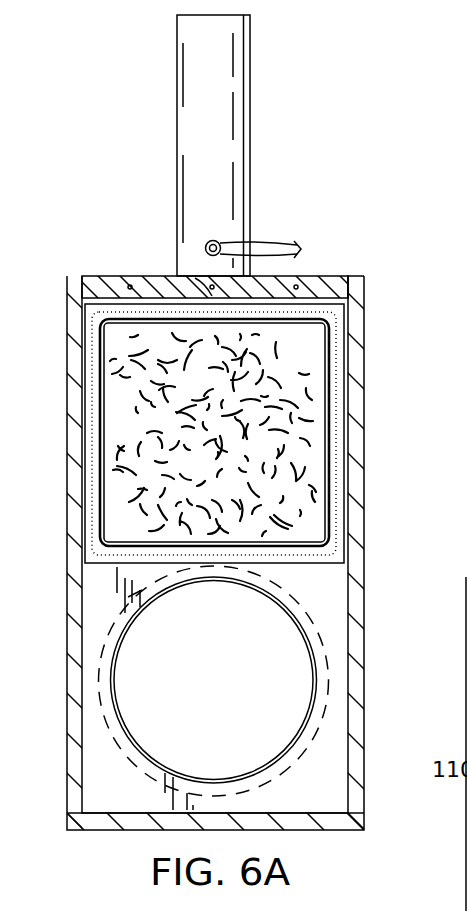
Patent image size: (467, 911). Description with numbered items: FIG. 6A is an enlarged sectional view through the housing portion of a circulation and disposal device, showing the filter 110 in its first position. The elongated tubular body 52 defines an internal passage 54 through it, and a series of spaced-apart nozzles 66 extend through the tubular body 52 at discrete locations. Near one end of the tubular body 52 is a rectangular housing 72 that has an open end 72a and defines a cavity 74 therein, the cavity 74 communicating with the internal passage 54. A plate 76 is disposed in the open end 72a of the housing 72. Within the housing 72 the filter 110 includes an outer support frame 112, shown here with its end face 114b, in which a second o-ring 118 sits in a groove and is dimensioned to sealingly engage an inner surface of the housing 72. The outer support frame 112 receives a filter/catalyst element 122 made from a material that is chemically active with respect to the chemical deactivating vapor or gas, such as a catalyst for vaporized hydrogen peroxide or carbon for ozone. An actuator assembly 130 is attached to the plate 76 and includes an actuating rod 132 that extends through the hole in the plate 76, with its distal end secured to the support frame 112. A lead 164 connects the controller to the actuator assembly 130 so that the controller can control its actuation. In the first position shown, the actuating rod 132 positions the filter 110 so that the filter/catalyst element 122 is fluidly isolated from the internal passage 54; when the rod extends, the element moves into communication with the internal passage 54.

The actuator assembly 130 is at (250, 110).
The lead 164 is at (266, 242).
The actuating rod 132 is at (210, 289).
The plate 76 is at (324, 286).
The open end 72a is at (363, 283).
The housing 72 is at (366, 345).
The end face 114b is at (340, 418).
The outer support frame 112 is at (344, 455).
The second o-ring 118 is at (332, 496).
The filter/catalyst element 122 is at (108, 428).
The filter 110 is at (104, 572).
The cavity 74 is at (358, 596).
The internal passage 54 is at (293, 689).
The nozzles 66 is at (99, 671).
The tubular body 52 is at (137, 762).